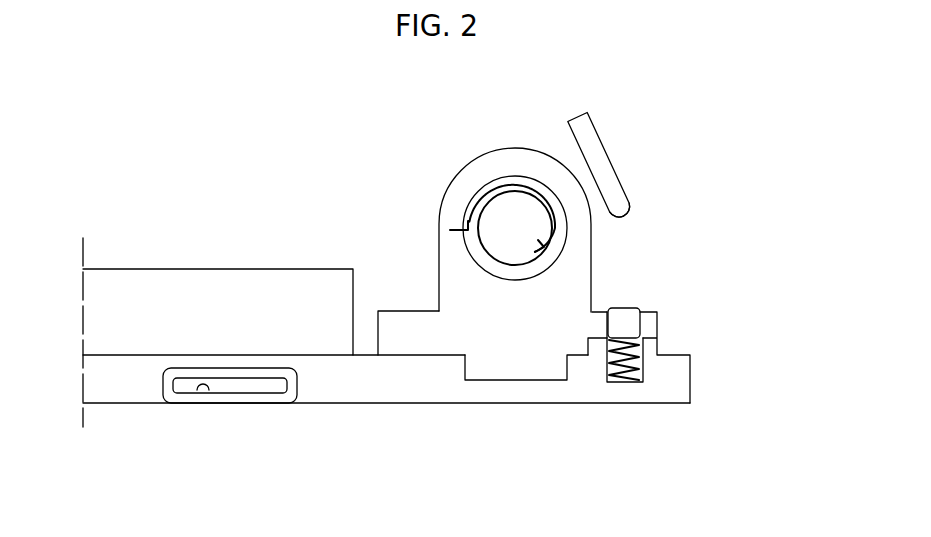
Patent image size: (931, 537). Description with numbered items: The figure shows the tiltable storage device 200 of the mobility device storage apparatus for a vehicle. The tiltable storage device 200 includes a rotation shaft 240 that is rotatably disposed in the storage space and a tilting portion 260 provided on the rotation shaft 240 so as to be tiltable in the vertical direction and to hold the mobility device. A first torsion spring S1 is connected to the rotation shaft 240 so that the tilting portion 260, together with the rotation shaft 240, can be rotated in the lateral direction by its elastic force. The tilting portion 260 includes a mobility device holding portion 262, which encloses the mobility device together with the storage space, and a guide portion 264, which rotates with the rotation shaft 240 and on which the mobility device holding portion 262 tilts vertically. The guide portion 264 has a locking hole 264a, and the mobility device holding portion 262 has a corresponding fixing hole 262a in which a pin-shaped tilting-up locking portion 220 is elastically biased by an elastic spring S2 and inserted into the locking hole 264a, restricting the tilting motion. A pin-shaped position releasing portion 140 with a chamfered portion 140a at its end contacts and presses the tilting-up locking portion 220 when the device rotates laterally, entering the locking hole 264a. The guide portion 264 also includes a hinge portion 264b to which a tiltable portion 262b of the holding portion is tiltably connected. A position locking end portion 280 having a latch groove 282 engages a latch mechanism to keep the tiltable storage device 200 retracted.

The position releasing portion 140 is at (597, 148).
The chamfered portion 140a is at (632, 205).
The tiltable storage device 200 is at (237, 258).
The tilting-up locking portion 220 is at (627, 320).
The rotation shaft 240 is at (578, 267).
The tilting portion 260 is at (430, 303).
The mobility device holding portion 262 is at (183, 283).
The fixing hole 262a is at (640, 382).
The tiltable portion 262b is at (433, 387).
The guide portion 264 is at (400, 342).
The locking hole 264a is at (644, 323).
The hinge portion 264b is at (534, 370).
The position locking end portion 280 is at (258, 403).
The latch groove 282 is at (199, 390).
The first torsion spring S1 is at (513, 184).
The elastic spring S2 is at (645, 367).